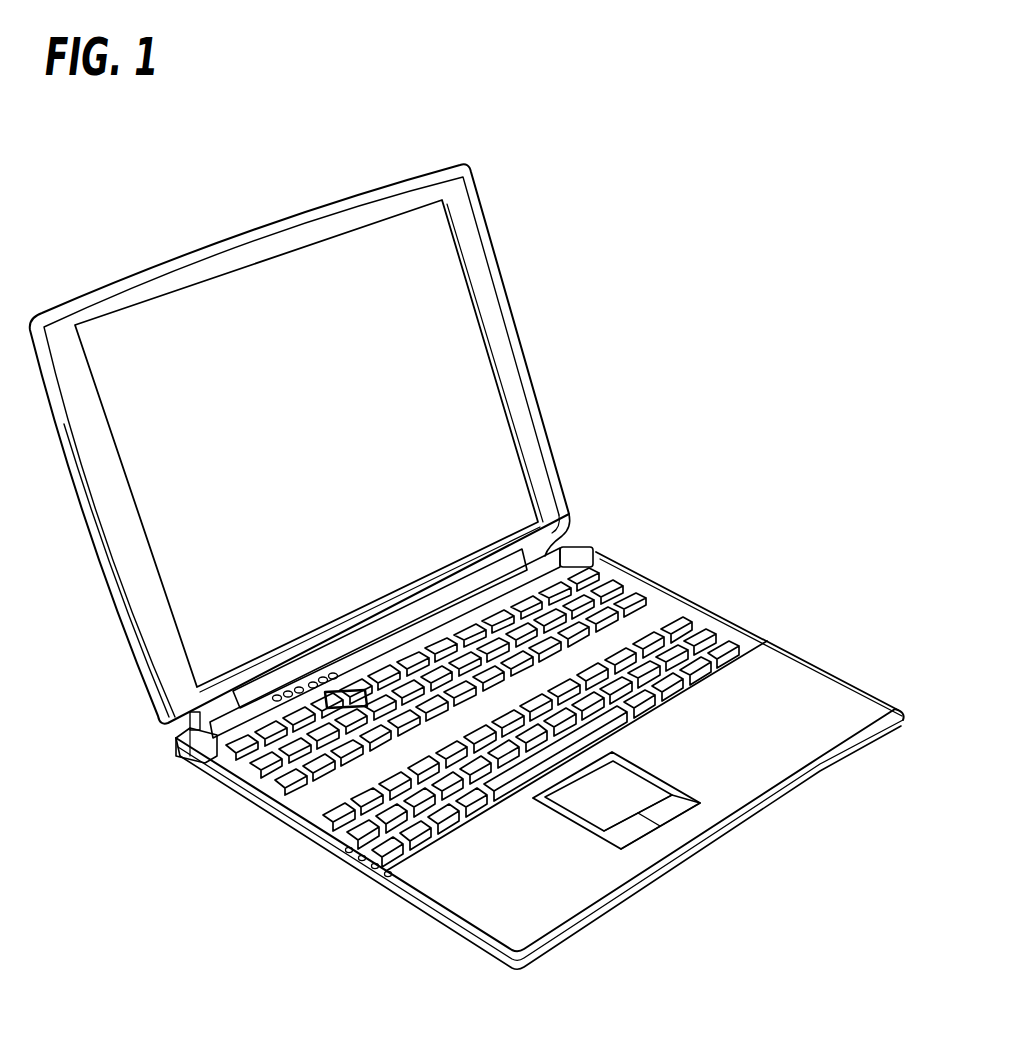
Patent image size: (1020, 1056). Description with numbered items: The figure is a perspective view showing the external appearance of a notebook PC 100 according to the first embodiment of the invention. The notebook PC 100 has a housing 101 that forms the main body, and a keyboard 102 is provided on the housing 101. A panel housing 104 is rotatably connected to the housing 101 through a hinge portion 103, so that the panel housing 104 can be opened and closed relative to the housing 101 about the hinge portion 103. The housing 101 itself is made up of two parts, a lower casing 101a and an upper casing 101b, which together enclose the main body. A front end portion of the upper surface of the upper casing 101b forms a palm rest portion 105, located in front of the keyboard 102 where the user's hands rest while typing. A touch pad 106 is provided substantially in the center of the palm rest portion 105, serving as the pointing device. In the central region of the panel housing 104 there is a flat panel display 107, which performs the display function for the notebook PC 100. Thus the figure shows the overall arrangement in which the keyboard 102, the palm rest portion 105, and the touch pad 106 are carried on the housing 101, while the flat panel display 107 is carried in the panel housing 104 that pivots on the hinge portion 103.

The notebook PC 100 is at (655, 303).
The housing 101 is at (817, 687).
The lower casing 101a is at (550, 950).
The upper casing 101b is at (597, 920).
The keyboard 102 is at (668, 607).
The hinge portion 103 is at (573, 505).
The panel housing 104 is at (486, 295).
The palm rest portion 105 is at (492, 906).
The touch pad 106 is at (587, 843).
The flat panel display 107 is at (511, 407).